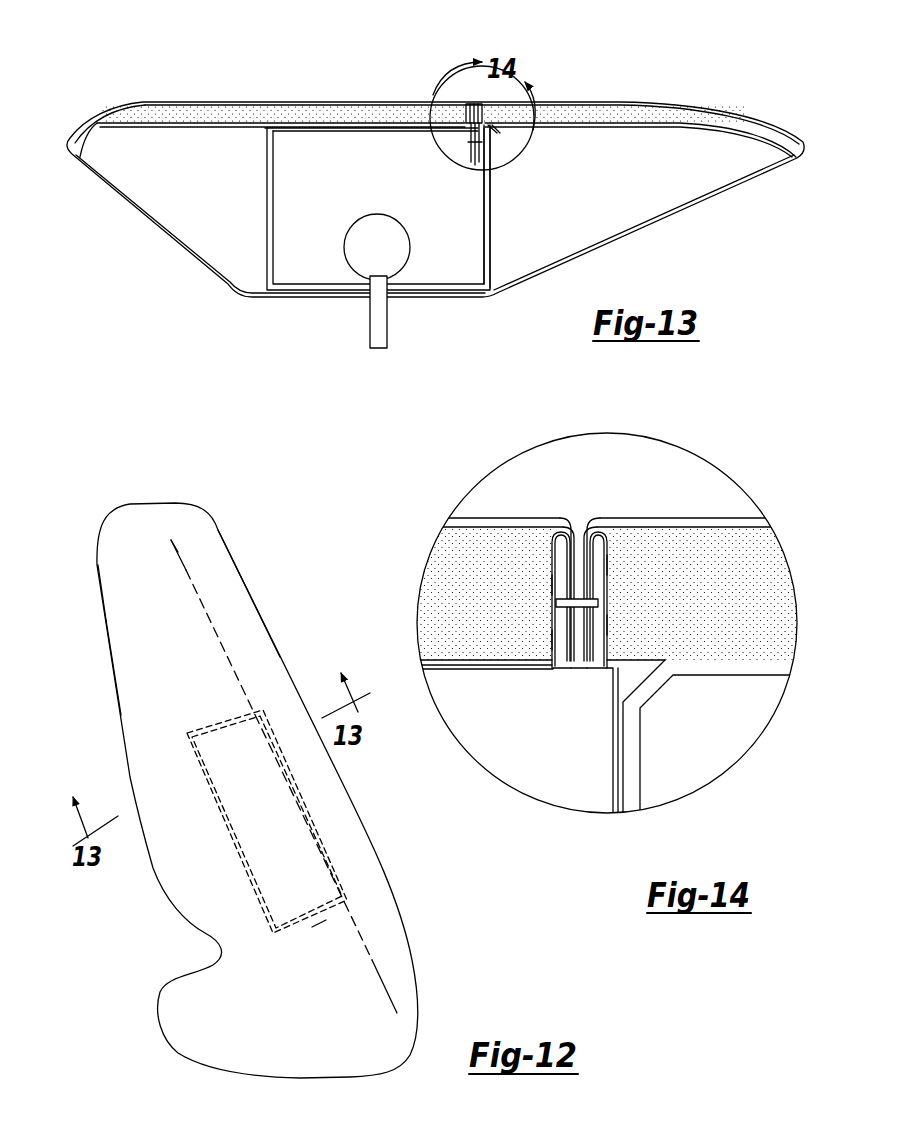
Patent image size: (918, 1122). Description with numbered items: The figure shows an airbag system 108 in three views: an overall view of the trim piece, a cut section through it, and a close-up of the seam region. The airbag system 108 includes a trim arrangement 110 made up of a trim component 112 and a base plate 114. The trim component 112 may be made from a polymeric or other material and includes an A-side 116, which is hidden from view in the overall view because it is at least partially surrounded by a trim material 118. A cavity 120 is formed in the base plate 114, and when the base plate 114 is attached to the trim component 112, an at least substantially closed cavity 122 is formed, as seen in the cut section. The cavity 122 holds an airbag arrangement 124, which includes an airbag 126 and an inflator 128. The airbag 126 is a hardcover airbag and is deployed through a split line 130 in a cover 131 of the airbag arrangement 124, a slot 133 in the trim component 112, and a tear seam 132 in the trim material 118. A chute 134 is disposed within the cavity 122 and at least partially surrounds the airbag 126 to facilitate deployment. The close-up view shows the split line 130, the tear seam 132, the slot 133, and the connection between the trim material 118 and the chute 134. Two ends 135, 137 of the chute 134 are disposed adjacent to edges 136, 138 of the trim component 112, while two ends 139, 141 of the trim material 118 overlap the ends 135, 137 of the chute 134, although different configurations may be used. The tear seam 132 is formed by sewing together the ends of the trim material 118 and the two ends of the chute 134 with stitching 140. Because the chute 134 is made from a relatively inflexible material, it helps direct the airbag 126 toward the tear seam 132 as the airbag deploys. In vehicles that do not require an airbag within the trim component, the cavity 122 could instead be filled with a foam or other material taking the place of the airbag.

In FIG. 12, the airbag system 108 is at (287, 550).
In FIG. 13, the trim arrangement 110 is at (157, 78).
In FIG. 13, the trim component 112 is at (736, 110).
In FIG. 14, the trim component 112 is at (770, 584).
In FIG. 12, the trim component 112 is at (263, 616).
In FIG. 13, the base plate 114 is at (737, 135).
In FIG. 14, the base plate 114 is at (731, 682).
In FIG. 12, the A-side 116 is at (128, 578).
In FIG. 13, the trim material 118 is at (108, 107).
In FIG. 14, the trim material 118 is at (697, 519).
In FIG. 12, the trim material 118 is at (122, 634).
In FIG. 12, the cavity 120 is at (345, 855).
In FIG. 13, the cavity 122 is at (496, 130).
In FIG. 13, the airbag arrangement 124 is at (444, 265).
In FIG. 13, the airbag 126 is at (456, 233).
In FIG. 13, the inflator 128 is at (345, 263).
In FIG. 14, the split line 130 is at (583, 670).
In FIG. 12, the split line 130 is at (318, 925).
In FIG. 14, the cover 131 is at (611, 770).
In FIG. 13, the tear seam 132 is at (468, 103).
In FIG. 14, the tear seam 132 is at (573, 522).
In FIG. 12, the tear seam 132 is at (178, 552).
In FIG. 13, the slot 133 is at (478, 150).
In FIG. 14, the slot 133 is at (579, 532).
In FIG. 12, the slot 133 is at (222, 643).
In FIG. 13, the chute 134 is at (262, 131).
In FIG. 14, the chute 134 is at (556, 670).
In FIG. 14, the end of the chute 135 is at (565, 585).
In FIG. 14, the edge of the trim component 136 is at (556, 537).
In FIG. 14, the end of the chute 137 is at (595, 624).
In FIG. 14, the edge of the trim component 138 is at (598, 532).
In FIG. 14, the end of the trim material 139 is at (568, 640).
In FIG. 14, the stitching 140 is at (598, 594).
In FIG. 14, the end of the trim material 141 is at (595, 565).